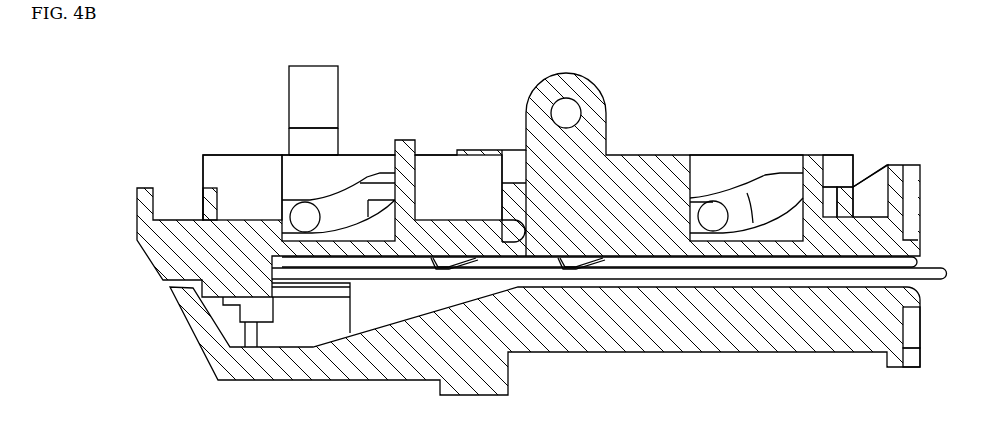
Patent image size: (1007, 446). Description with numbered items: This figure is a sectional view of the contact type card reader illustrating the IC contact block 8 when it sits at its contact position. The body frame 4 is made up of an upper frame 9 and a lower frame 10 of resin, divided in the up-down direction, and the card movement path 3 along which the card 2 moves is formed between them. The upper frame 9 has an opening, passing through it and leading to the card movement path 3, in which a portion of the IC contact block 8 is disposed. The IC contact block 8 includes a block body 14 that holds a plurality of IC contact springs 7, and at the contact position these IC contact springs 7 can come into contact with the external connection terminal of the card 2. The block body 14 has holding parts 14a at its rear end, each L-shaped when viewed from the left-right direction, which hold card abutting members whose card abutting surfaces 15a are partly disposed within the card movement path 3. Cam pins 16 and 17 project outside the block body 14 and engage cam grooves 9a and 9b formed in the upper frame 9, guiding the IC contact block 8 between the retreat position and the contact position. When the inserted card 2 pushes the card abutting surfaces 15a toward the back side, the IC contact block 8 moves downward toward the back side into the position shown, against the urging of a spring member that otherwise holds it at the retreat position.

The card 2 is at (940, 263).
The card movement path 3 is at (783, 277).
The body frame 4 is at (637, 352).
The lower frame 10 is at (911, 337).
The IC contact spring 7 is at (573, 268).
The IC contact block 8 is at (310, 66).
The upper frame 9 is at (620, 155).
The cam groove 9a is at (363, 180).
The cam groove 9b is at (771, 180).
The block body 14 is at (289, 100).
The holding part 14a is at (257, 322).
The card abutting surface 15a is at (275, 310).
The cam pin 16 is at (290, 217).
The cam pin 17 is at (708, 200).